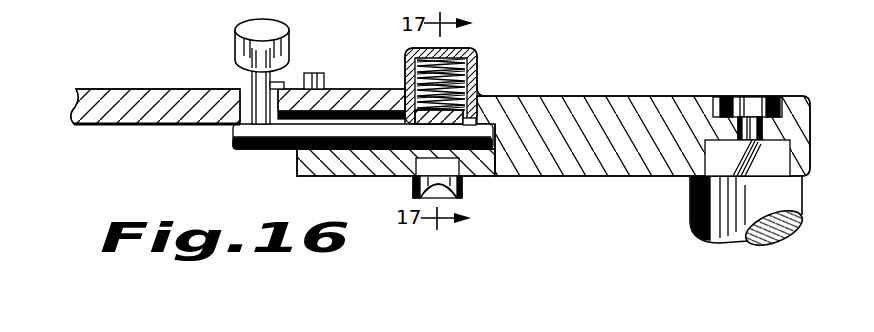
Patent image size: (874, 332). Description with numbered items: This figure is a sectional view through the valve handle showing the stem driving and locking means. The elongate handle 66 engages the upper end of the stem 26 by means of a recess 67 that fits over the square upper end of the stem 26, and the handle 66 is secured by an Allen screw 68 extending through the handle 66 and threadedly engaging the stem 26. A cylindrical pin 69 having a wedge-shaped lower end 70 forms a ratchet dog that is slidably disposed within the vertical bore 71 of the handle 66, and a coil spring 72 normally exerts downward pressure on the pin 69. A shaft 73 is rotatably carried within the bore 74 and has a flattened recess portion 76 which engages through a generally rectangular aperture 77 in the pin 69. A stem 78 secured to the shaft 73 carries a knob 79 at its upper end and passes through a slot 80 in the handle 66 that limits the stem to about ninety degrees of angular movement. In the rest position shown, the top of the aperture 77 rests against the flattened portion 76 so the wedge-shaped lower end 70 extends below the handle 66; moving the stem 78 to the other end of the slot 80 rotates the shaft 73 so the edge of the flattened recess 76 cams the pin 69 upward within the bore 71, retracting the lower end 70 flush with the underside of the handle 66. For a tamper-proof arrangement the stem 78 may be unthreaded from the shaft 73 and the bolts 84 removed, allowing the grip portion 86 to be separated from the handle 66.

The stem 26 is at (692, 200).
The handle 66 is at (576, 92).
The recess 67 is at (790, 167).
The Allen screw 68 is at (760, 97).
The cylindrical pin 69 is at (413, 194).
The wedge-shaped lower end 70 is at (456, 198).
The vertical bore 71 is at (470, 78).
The coil spring 72 is at (412, 80).
The shaft 73 is at (232, 138).
The bore 74 is at (298, 158).
The flattened recess portion 76 is at (464, 122).
The rectangular aperture 77 is at (463, 172).
The stem 78 is at (285, 82).
The knob 79 is at (237, 32).
The slot 80 is at (252, 78).
The bolts 84 is at (320, 73).
The grip portion 86 is at (147, 88).